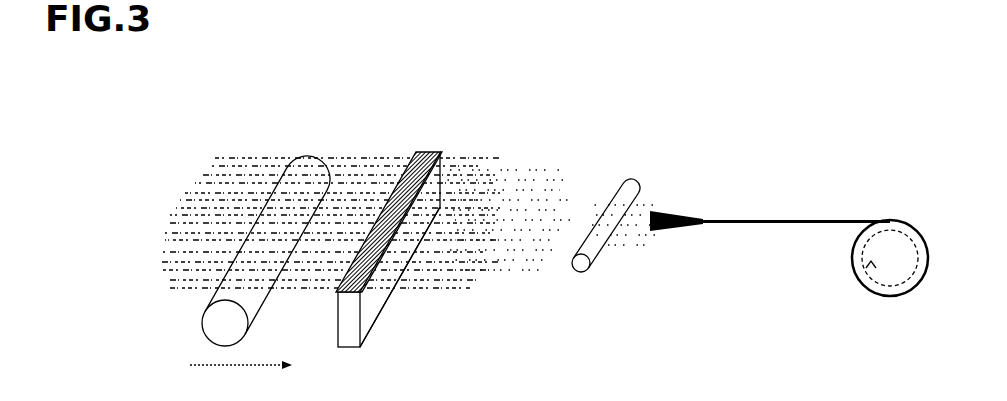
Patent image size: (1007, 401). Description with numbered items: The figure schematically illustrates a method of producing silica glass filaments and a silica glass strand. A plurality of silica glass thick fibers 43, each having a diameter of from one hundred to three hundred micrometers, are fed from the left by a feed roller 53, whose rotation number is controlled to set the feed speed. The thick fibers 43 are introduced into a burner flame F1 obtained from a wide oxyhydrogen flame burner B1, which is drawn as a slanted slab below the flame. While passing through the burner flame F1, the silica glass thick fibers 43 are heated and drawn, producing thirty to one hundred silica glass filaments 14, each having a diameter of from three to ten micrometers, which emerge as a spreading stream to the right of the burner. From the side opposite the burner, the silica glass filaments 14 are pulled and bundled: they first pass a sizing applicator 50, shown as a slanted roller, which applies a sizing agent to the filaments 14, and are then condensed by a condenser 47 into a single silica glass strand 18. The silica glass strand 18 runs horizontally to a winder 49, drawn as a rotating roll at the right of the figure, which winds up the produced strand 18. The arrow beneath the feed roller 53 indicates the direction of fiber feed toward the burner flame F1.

The feed roller 53 is at (290, 160).
The silica glass thick fiber 43 is at (346, 160).
The burner flame F1 is at (415, 142).
The silica glass filaments 14 is at (522, 186).
The sizing applicator 50 is at (580, 272).
The condenser 47 is at (703, 219).
The silica glass strand 18 is at (777, 223).
The winder 49 is at (926, 275).
The wide oxyhydrogen flame burner B1 is at (390, 302).